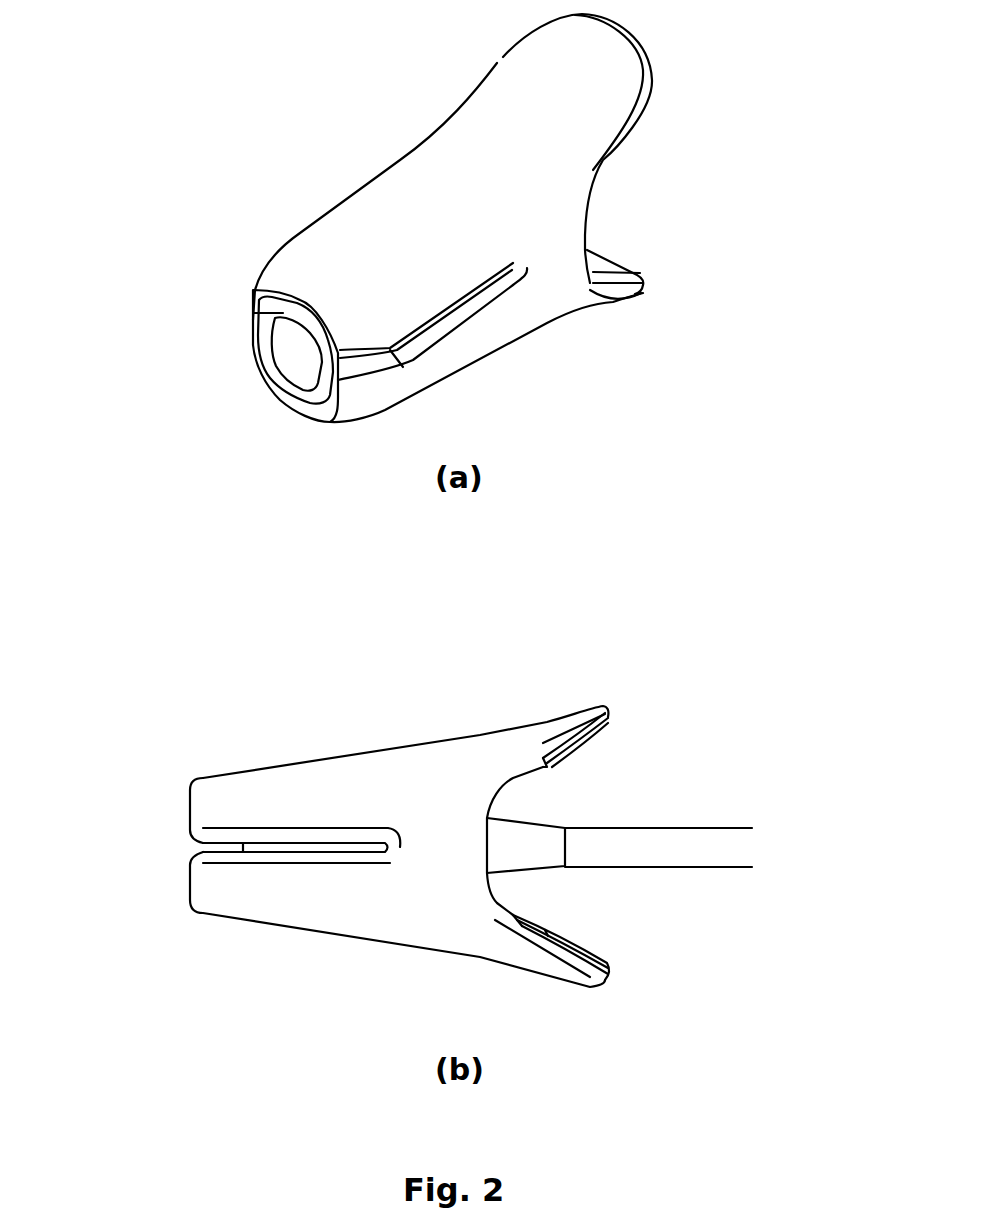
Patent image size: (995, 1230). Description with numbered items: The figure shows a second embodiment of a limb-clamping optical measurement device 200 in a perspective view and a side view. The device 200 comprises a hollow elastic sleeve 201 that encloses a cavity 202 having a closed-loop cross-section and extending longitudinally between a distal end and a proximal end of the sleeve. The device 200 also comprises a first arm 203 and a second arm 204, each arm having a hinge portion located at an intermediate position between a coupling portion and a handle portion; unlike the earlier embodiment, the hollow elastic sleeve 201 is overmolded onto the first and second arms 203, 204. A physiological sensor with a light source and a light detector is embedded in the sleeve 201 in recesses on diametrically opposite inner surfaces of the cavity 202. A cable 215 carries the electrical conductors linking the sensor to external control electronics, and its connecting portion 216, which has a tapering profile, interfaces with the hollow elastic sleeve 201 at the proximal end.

The device 200 is at (360, 125).
The hollow elastic sleeve 201 is at (303, 393).
The cavity 202 is at (316, 345).
The first arm 203 is at (608, 725).
The second arm 204 is at (574, 944).
The cable 215 is at (707, 828).
The connecting portion 216 is at (540, 838).